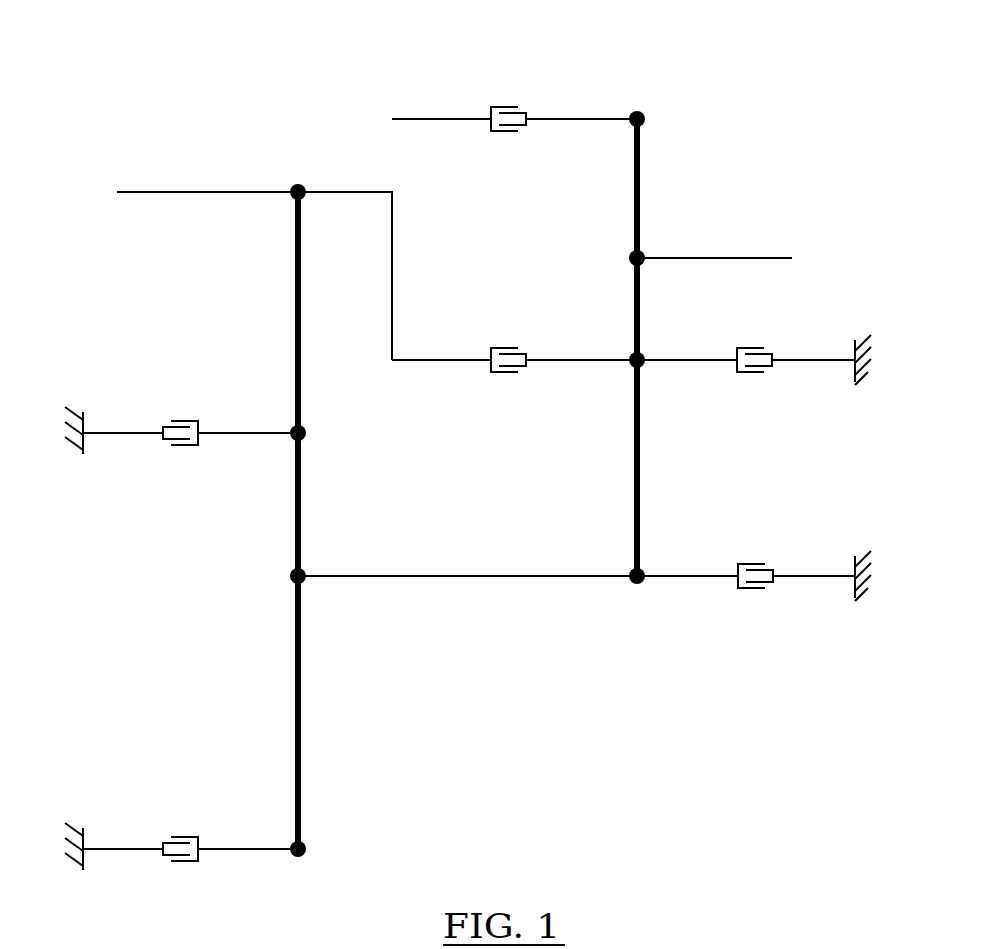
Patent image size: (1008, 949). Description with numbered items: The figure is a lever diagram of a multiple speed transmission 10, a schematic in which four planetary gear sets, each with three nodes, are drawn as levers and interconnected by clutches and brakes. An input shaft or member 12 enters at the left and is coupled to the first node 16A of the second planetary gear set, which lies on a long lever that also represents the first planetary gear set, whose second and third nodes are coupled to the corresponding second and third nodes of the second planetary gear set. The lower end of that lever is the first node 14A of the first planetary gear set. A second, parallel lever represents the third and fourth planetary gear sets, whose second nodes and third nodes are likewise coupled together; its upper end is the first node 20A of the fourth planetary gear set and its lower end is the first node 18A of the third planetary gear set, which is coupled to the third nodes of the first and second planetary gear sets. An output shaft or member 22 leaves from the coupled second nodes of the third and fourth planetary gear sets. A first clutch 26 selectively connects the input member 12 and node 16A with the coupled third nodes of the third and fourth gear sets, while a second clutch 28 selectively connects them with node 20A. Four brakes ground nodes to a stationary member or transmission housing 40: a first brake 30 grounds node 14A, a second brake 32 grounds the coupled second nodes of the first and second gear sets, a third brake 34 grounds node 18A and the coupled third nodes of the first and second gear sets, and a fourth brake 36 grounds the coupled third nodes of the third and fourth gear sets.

The multiple speed transmission 10 is at (728, 85).
The input shaft or member 12 is at (177, 190).
The output shaft or member 22 is at (725, 256).
The first node of the second planetary gear set 16A is at (296, 186).
The first node of the first planetary gear set 14A is at (294, 860).
The first node of the fourth planetary gear set 20A is at (634, 110).
The first node of the third planetary gear set 18A is at (634, 590).
The first clutch 26 is at (503, 347).
The second clutch 28 is at (505, 105).
The first brake 30 is at (182, 865).
The second brake 32 is at (180, 447).
The third brake 34 is at (743, 590).
The fourth brake 36 is at (748, 373).
The stationary member or transmission housing 40 is at (857, 381).